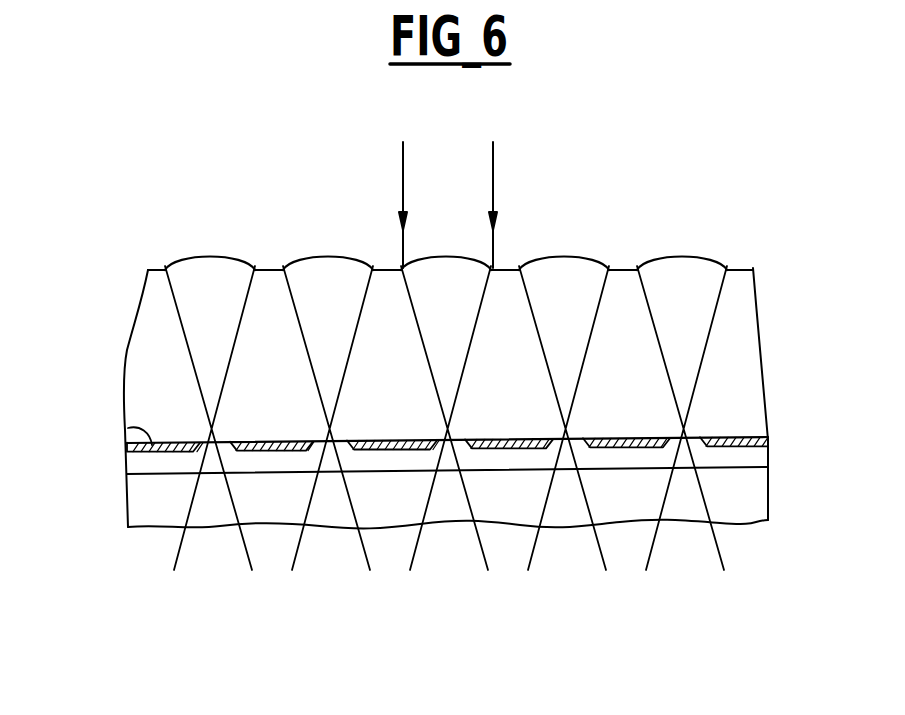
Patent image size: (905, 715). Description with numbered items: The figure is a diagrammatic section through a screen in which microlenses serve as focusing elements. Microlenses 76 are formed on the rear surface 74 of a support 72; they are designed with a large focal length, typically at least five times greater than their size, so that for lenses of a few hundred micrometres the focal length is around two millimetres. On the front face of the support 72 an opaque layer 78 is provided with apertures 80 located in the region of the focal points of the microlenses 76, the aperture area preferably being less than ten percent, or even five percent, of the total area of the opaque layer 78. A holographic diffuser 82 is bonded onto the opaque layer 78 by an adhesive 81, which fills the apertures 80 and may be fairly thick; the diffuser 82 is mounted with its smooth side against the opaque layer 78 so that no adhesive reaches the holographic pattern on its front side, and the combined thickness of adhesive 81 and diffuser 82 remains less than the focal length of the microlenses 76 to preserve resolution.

The support 72 is at (152, 323).
The rear surface 74 is at (152, 268).
The microlenses 76 is at (686, 253).
The opaque layer 78 is at (130, 428).
The apertures 80 is at (208, 440).
The adhesive 81 is at (140, 466).
The holographic diffuser 82 is at (143, 510).